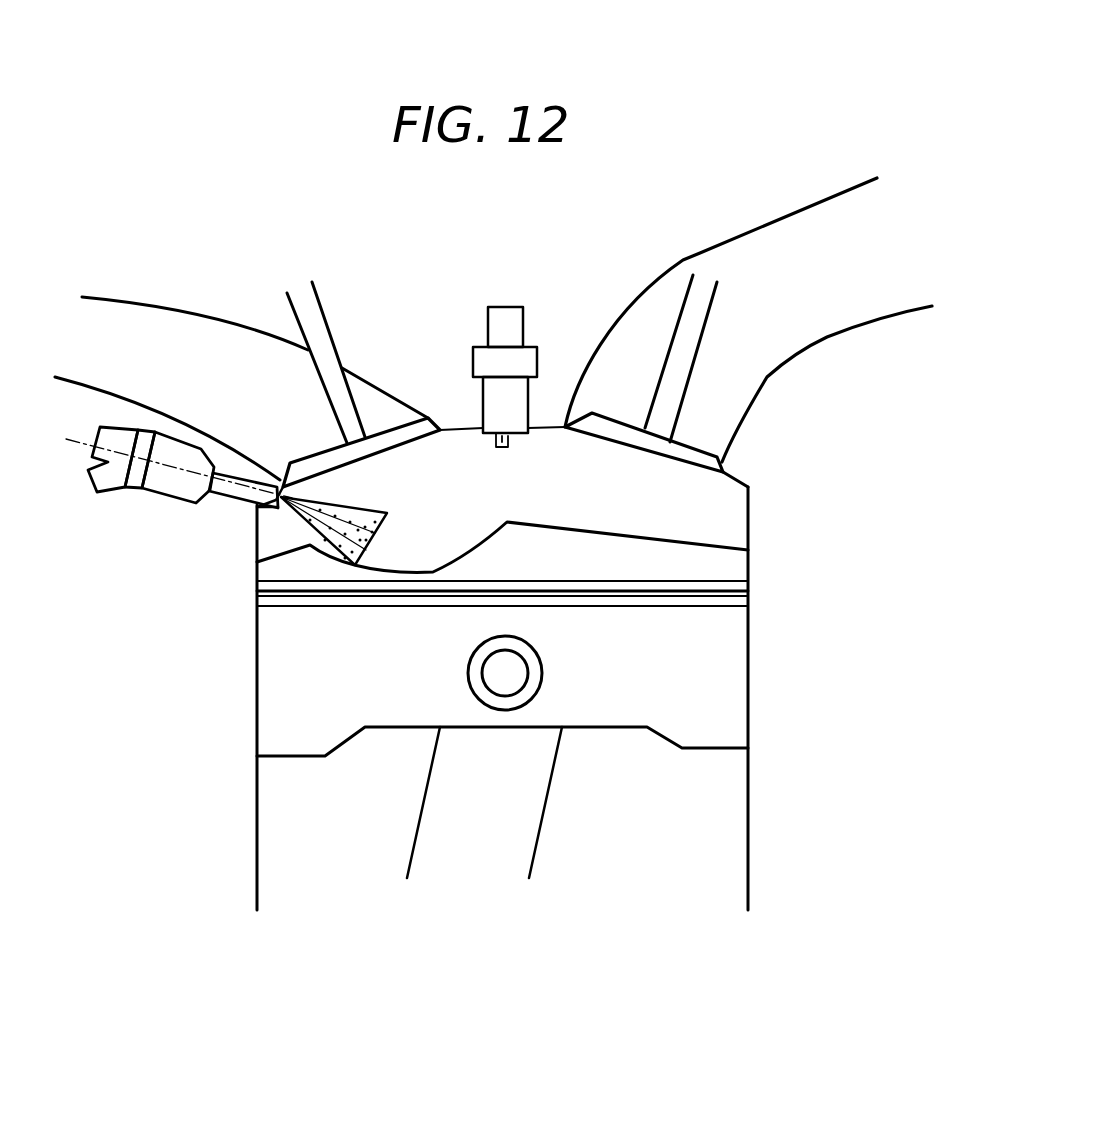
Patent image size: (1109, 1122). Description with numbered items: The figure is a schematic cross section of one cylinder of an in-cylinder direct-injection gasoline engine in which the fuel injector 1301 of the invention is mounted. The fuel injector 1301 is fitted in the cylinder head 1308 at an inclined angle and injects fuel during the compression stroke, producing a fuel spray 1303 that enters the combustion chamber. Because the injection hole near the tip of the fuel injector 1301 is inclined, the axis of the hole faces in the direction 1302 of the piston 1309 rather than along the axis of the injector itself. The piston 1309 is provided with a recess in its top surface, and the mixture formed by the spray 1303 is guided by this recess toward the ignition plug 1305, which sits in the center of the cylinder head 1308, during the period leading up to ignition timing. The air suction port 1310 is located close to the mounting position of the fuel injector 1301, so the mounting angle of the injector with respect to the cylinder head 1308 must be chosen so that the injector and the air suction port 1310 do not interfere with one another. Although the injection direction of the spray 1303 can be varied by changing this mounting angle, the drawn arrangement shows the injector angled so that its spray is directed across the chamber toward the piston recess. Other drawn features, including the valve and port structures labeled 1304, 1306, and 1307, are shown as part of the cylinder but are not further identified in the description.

The fuel injector 1301 is at (163, 495).
The direction of piston 1302 is at (385, 555).
The fuel spray 1303 is at (303, 522).
The intake valve 1304 is at (383, 423).
The ignition plug 1305 is at (500, 307).
The exhaust port 1306 is at (700, 252).
The exhaust valve 1307 is at (692, 442).
The cylinder head 1308 is at (748, 487).
The piston 1309 is at (660, 537).
The air suction port 1310 is at (168, 337).